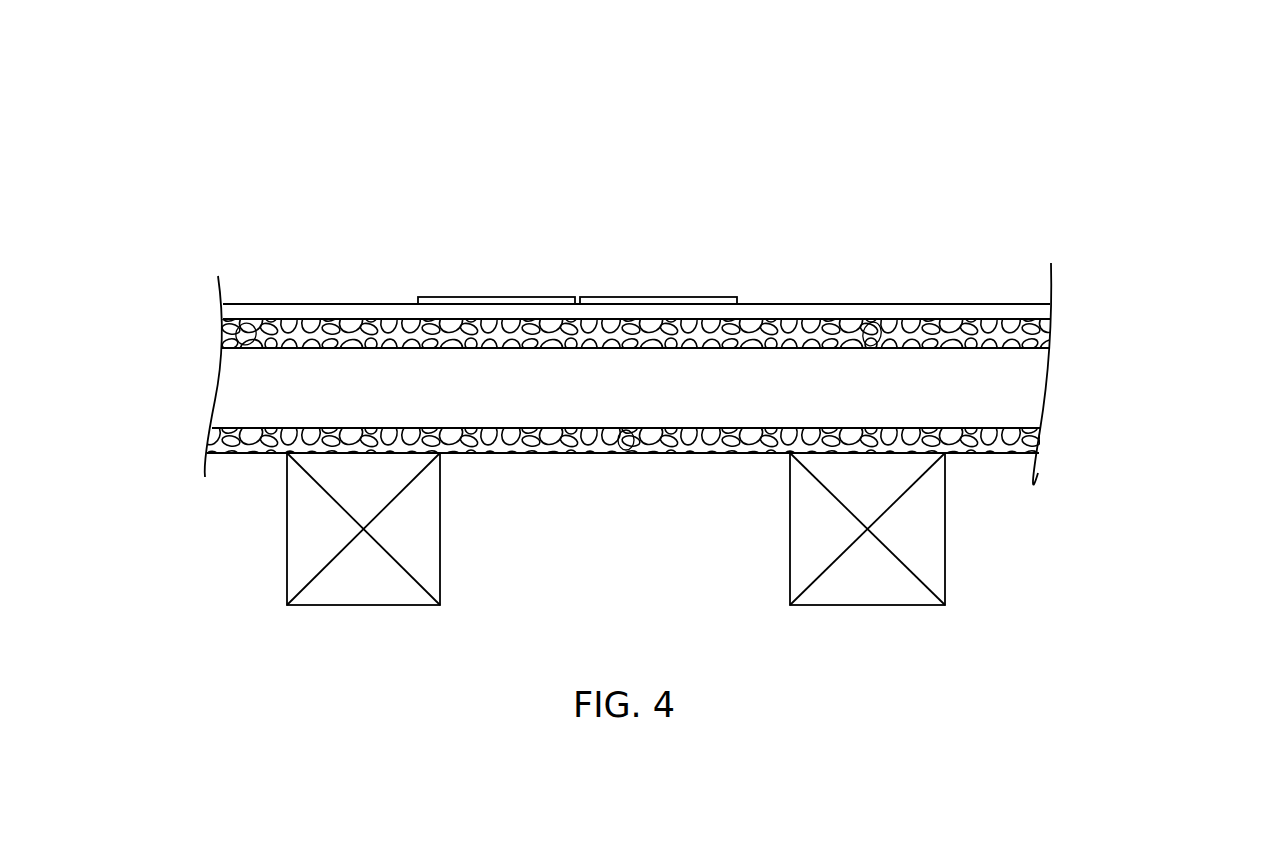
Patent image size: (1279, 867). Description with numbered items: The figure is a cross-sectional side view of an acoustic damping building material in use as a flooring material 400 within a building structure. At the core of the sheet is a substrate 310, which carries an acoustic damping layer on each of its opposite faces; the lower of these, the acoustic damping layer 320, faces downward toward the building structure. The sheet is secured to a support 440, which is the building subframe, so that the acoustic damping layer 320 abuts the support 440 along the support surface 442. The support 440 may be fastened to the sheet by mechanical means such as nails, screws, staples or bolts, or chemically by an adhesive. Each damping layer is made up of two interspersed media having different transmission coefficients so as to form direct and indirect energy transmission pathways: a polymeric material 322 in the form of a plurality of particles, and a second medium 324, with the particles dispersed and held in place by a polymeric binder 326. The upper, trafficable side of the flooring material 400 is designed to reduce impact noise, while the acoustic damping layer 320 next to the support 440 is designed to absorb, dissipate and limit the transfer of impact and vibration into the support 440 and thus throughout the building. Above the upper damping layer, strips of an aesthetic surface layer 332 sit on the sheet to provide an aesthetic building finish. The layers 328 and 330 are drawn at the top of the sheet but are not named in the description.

The flooring material 400 is at (1138, 165).
The substrate 310 is at (591, 397).
The second acoustic damping layer 320 is at (1038, 455).
The polymeric material 322 is at (227, 338).
The medium 324 is at (253, 322).
The polymeric binder 326 is at (870, 322).
The binder layer 328 is at (337, 312).
The top layer 330 is at (387, 305).
The aesthetic surface layer 332 is at (475, 297).
The support 440 is at (342, 533).
The support surface 442 is at (348, 453).